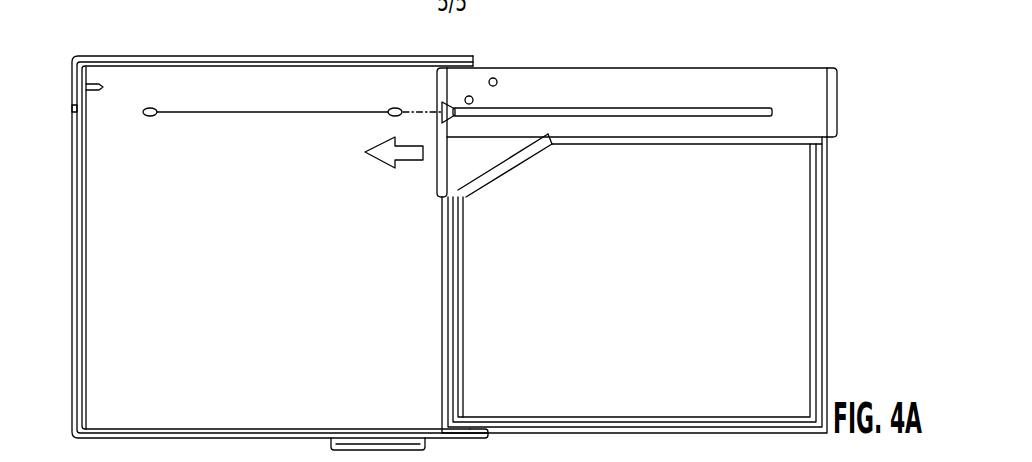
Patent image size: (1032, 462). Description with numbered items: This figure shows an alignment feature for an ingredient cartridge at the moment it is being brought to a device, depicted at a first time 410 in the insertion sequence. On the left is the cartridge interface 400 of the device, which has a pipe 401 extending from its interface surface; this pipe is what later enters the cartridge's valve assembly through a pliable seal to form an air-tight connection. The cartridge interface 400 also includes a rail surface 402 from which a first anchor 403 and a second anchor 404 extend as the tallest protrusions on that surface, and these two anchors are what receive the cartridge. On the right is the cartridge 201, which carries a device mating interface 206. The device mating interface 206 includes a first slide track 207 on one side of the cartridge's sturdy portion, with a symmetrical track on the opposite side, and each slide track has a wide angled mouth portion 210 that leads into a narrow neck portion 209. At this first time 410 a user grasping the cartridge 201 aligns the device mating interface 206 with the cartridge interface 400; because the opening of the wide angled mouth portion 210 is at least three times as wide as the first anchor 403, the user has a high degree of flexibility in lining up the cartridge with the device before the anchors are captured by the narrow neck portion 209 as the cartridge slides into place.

The cartridge 201 is at (645, 252).
The device mating interface 206 is at (498, 62).
The first slide track 207 is at (732, 110).
The narrow neck portion 209 is at (553, 113).
The wide angled mouth portion 210 is at (405, 102).
The cartridge interface 400 is at (82, 298).
The pipe 401 is at (101, 88).
The rail surface 402 is at (276, 149).
The first anchor 403 is at (393, 117).
The second anchor 404 is at (151, 117).
The first time 410 is at (858, 282).